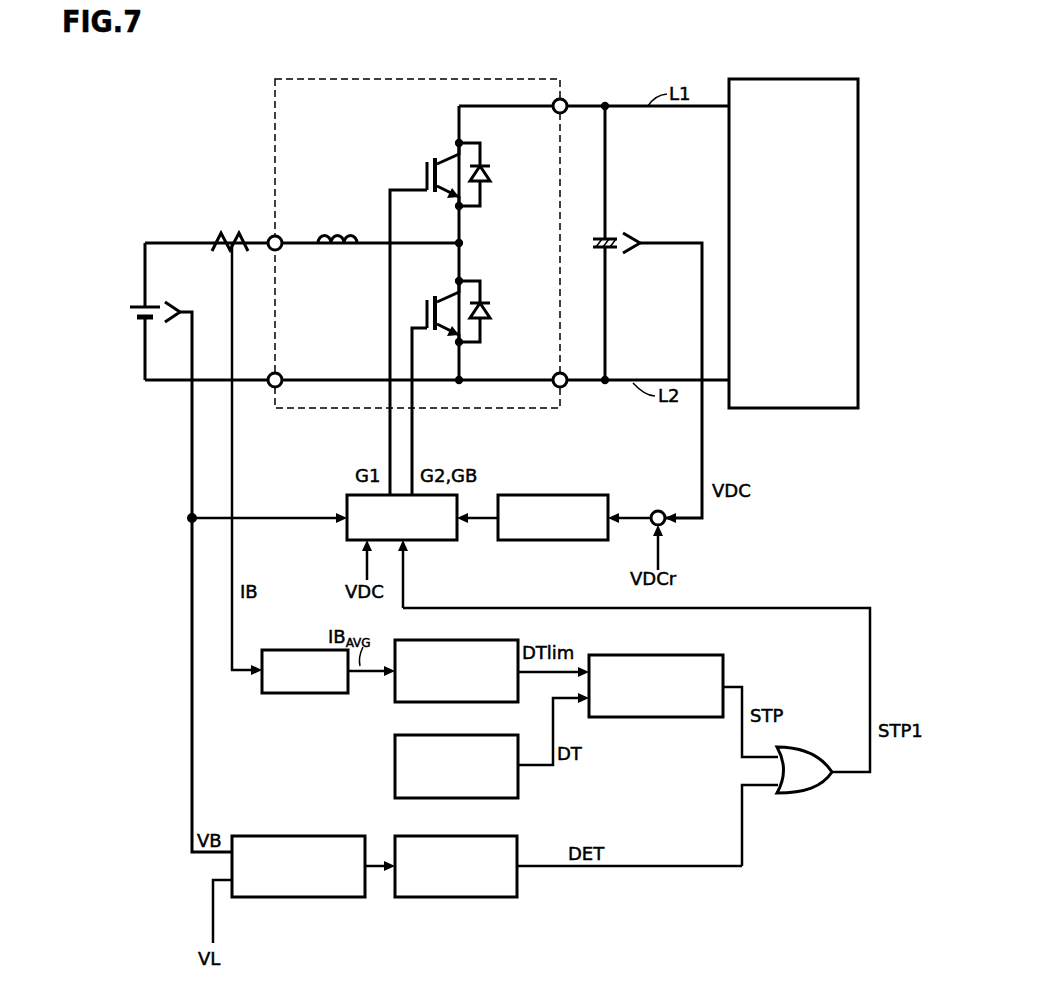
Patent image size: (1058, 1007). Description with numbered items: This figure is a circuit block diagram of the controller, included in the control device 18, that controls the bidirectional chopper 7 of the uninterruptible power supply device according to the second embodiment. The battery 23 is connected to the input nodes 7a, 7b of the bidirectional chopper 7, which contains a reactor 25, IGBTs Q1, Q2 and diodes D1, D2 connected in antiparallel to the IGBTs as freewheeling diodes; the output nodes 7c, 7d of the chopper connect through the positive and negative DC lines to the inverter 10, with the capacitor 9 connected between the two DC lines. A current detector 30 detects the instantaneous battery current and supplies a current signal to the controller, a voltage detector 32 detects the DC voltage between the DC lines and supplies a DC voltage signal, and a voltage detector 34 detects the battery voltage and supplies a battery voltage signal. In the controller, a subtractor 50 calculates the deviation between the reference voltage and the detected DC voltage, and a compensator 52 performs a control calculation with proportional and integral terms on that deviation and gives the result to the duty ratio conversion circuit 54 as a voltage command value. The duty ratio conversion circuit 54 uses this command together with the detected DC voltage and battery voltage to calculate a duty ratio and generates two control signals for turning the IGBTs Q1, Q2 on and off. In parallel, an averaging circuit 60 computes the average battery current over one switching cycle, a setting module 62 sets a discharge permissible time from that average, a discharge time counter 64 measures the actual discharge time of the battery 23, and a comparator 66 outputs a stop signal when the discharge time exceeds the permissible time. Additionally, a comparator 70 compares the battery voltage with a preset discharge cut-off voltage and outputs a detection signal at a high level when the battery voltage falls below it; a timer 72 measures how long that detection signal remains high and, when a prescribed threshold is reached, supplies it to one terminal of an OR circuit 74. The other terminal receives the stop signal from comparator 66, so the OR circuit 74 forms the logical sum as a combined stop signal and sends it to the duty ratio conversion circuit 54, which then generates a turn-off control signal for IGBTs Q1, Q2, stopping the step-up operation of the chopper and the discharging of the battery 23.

The bidirectional chopper 7 is at (489, 75).
The input node 7a is at (272, 236).
The input node 7b is at (271, 388).
The output node 7c is at (565, 99).
The output node 7d is at (566, 388).
The capacitor 9 is at (608, 252).
The inverter 10 is at (802, 408).
The control device 18 is at (773, 937).
The battery 23 is at (150, 305).
The reactor 25 is at (337, 236).
The current detector 30 is at (218, 236).
The voltage detector 32 is at (632, 233).
The voltage detector 34 is at (175, 305).
The subtractor 50 is at (658, 508).
The compensator 52 is at (572, 540).
The duty ratio conversion circuit 54 is at (425, 540).
The averaging circuit 60 is at (310, 693).
The setting module 62 is at (478, 702).
The discharge time counter 64 is at (478, 798).
The comparator 66 is at (670, 717).
The comparator 70 is at (310, 897).
The timer 72 is at (480, 897).
The OR circuit 74 is at (800, 790).
The IGBT Q1 is at (427, 162).
The IGBT Q2 is at (427, 300).
The diode D1 is at (483, 185).
The diode D2 is at (483, 322).